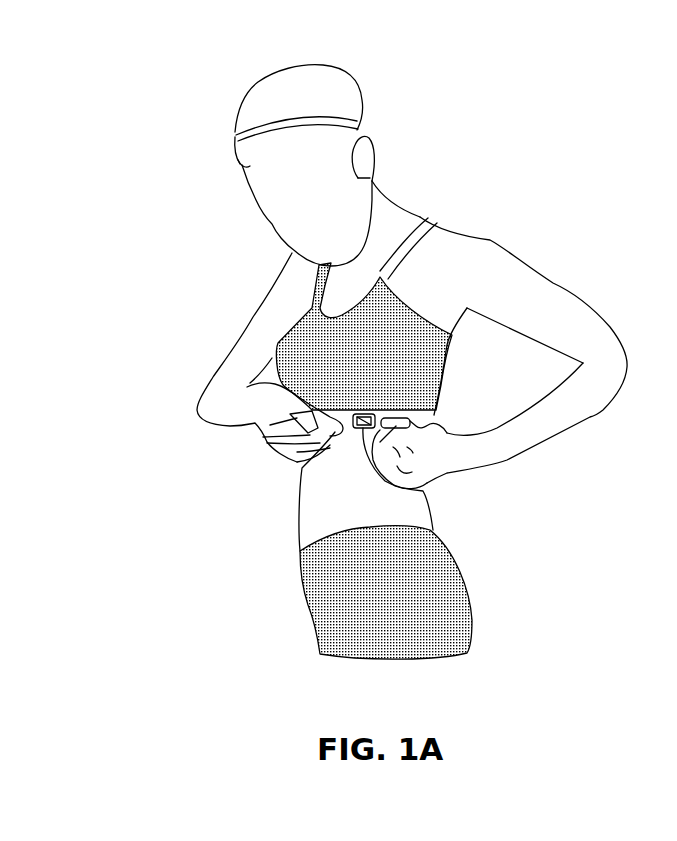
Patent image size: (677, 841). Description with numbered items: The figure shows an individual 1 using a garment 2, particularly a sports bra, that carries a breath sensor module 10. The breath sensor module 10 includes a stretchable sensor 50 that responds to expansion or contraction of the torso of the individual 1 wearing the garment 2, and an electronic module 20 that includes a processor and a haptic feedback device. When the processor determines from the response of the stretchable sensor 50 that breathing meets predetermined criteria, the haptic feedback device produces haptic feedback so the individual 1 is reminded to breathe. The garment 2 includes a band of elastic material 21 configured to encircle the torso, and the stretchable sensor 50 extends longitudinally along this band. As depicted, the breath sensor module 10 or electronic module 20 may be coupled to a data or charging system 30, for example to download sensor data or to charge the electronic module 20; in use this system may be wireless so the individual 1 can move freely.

The individual 1 is at (125, 25).
The garment 2 is at (447, 230).
The breath sensor module 10 is at (450, 382).
The electronic module 20 is at (425, 491).
The band of elastic material 21 is at (433, 423).
The data or charging system 30 is at (300, 475).
The stretchable sensor 50 is at (486, 460).